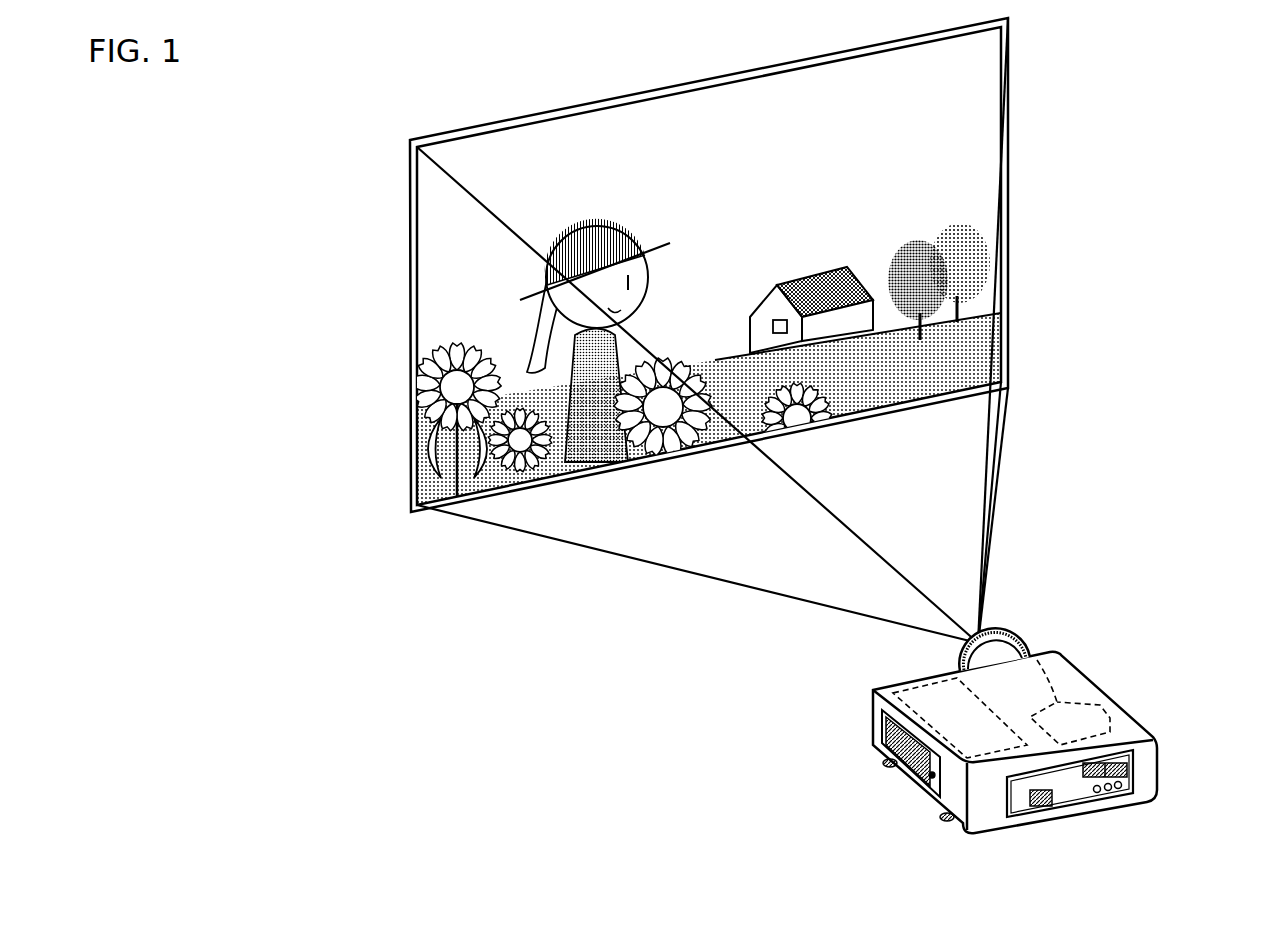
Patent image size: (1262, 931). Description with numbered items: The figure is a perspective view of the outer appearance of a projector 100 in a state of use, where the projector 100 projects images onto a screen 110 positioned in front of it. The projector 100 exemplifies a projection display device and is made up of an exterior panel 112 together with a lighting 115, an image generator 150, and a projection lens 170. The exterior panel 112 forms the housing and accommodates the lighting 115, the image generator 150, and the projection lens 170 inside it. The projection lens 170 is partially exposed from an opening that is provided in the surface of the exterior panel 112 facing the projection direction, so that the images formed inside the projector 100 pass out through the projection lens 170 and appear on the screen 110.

The projector 100 is at (1014, 672).
The screen 110 is at (985, 145).
The exterior panel 112 is at (1102, 692).
The lighting 115 is at (907, 705).
The image generator 150 is at (1108, 720).
The projection lens 170 is at (1007, 640).